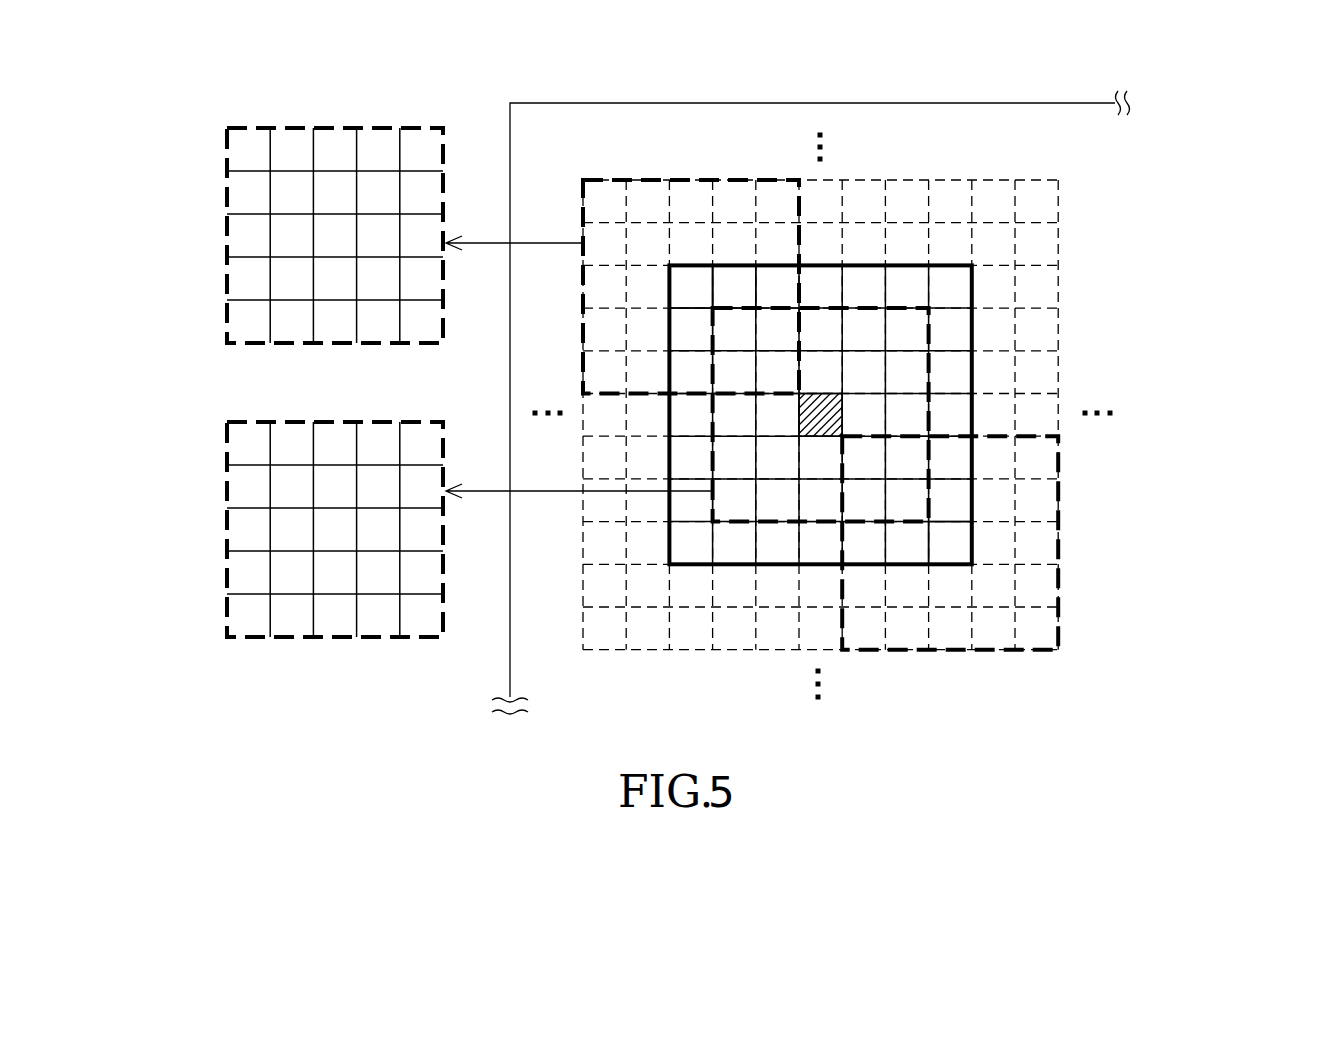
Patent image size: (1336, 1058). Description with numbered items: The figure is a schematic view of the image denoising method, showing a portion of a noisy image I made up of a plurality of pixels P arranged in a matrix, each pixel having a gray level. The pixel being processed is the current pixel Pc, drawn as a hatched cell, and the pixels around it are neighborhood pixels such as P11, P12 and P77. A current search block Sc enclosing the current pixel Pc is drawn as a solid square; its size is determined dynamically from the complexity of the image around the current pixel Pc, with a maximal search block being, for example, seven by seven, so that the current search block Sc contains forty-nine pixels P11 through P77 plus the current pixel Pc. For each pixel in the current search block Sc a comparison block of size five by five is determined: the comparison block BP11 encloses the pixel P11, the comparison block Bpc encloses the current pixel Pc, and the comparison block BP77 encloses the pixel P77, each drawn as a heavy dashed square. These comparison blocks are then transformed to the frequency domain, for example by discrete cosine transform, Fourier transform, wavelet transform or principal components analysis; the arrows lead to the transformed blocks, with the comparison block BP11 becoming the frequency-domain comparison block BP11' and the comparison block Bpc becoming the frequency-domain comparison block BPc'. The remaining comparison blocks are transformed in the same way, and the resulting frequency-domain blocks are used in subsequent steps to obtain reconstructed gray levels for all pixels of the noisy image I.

The noisy image I is at (960, 103).
The pixels P is at (1040, 202).
The current search block Sc is at (975, 288).
The neighborhood pixel P11 is at (690, 286).
The neighborhood pixel P12 is at (734, 286).
The neighborhood pixel P77 is at (950, 543).
The current pixel Pc is at (818, 412).
The comparison block BP11 is at (643, 221).
The comparison block Bpc is at (930, 336).
The comparison block BP77 is at (1058, 588).
The frequency-domain comparison block BP11' is at (303, 201).
The frequency-domain comparison block BPc' is at (285, 529).